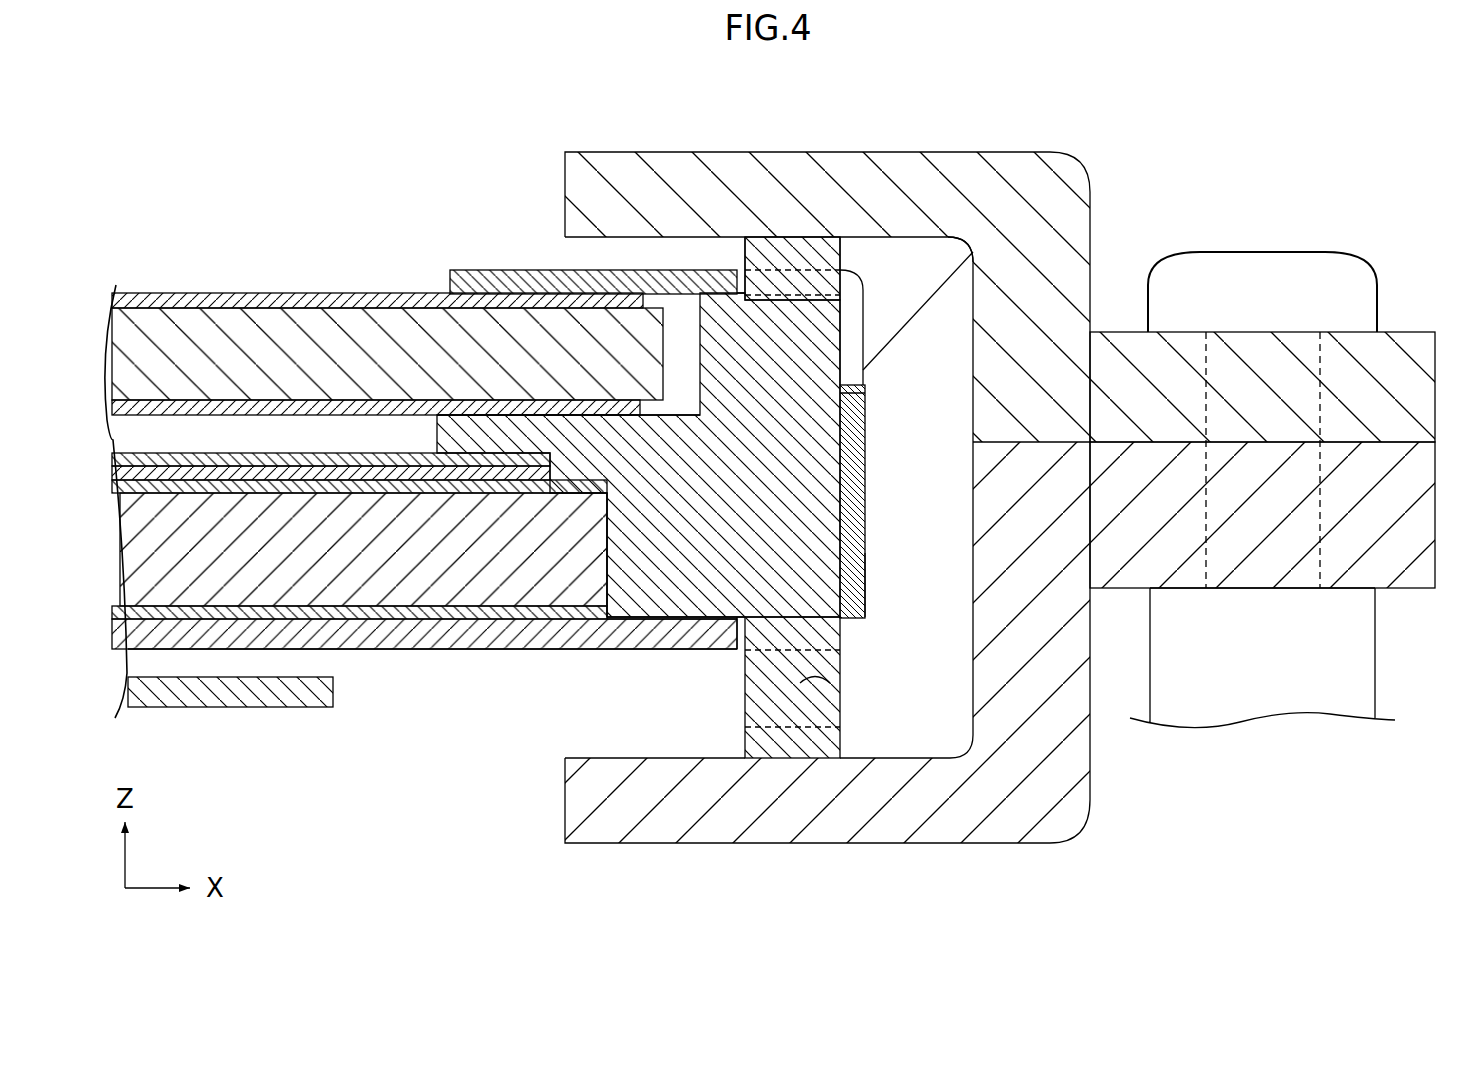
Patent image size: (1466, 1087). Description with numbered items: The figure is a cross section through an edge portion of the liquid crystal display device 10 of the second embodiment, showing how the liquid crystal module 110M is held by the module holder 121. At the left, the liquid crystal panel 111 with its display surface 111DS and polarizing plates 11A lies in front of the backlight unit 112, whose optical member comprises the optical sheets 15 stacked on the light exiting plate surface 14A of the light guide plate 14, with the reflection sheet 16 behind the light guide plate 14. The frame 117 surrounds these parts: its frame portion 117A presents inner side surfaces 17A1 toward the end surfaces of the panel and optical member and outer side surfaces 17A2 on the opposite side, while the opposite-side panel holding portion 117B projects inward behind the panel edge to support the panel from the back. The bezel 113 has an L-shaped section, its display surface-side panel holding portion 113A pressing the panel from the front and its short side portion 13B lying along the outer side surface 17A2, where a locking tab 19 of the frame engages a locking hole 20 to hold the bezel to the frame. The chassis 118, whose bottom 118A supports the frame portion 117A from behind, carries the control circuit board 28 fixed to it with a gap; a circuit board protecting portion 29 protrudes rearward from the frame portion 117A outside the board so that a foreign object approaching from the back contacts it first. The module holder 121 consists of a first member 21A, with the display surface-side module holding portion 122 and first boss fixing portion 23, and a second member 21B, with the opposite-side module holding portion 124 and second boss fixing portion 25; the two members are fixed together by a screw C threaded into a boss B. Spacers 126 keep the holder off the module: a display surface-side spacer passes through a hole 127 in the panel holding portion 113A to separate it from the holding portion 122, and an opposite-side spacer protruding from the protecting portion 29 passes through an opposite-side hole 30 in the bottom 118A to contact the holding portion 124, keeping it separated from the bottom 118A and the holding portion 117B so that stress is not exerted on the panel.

The liquid crystal display device 10 is at (215, 142).
The polarizing plate 11A is at (387, 308).
The liquid crystal panel 111 is at (203, 335).
The display surface 111DS is at (263, 307).
The optical sheets 15 is at (390, 472).
The light exiting plate surface 14A is at (172, 483).
The light guide plate 14 is at (210, 570).
The reflection sheet 16 is at (357, 619).
The chassis 118 is at (497, 650).
The bottom 118A is at (440, 640).
The liquid crystal module 110M is at (268, 650).
The control circuit board 28 is at (293, 697).
The backlight unit 112 is at (392, 755).
The bezel 113 is at (845, 272).
The display surface-side panel holding portion 113A is at (505, 285).
The frame 117 is at (864, 283).
The frame portion 117A is at (663, 582).
The opposite-side panel holding portion 117B is at (478, 433).
The inner side surface 17A1 is at (602, 614).
The outer side surface 17A2 is at (865, 553).
The display surface-side module holding portion 122 is at (633, 180).
The opposite-side module holding portion 124 is at (681, 805).
The spacers 126 is at (803, 486).
The holes 127 is at (757, 243).
The locking tab 19 is at (863, 370).
The locking hole 20 is at (975, 252).
The short side portion 13B is at (868, 465).
The circuit board protecting portion 29 is at (800, 683).
The opposite-side hole 30 is at (762, 648).
The module holder 121 is at (1277, 453).
The first member 21A is at (1408, 330).
The second member 21B is at (1408, 590).
The first boss fixing portion 23 is at (1253, 360).
The second boss fixing portion 25 is at (1255, 570).
The screw C is at (1278, 252).
The boss B is at (1290, 686).